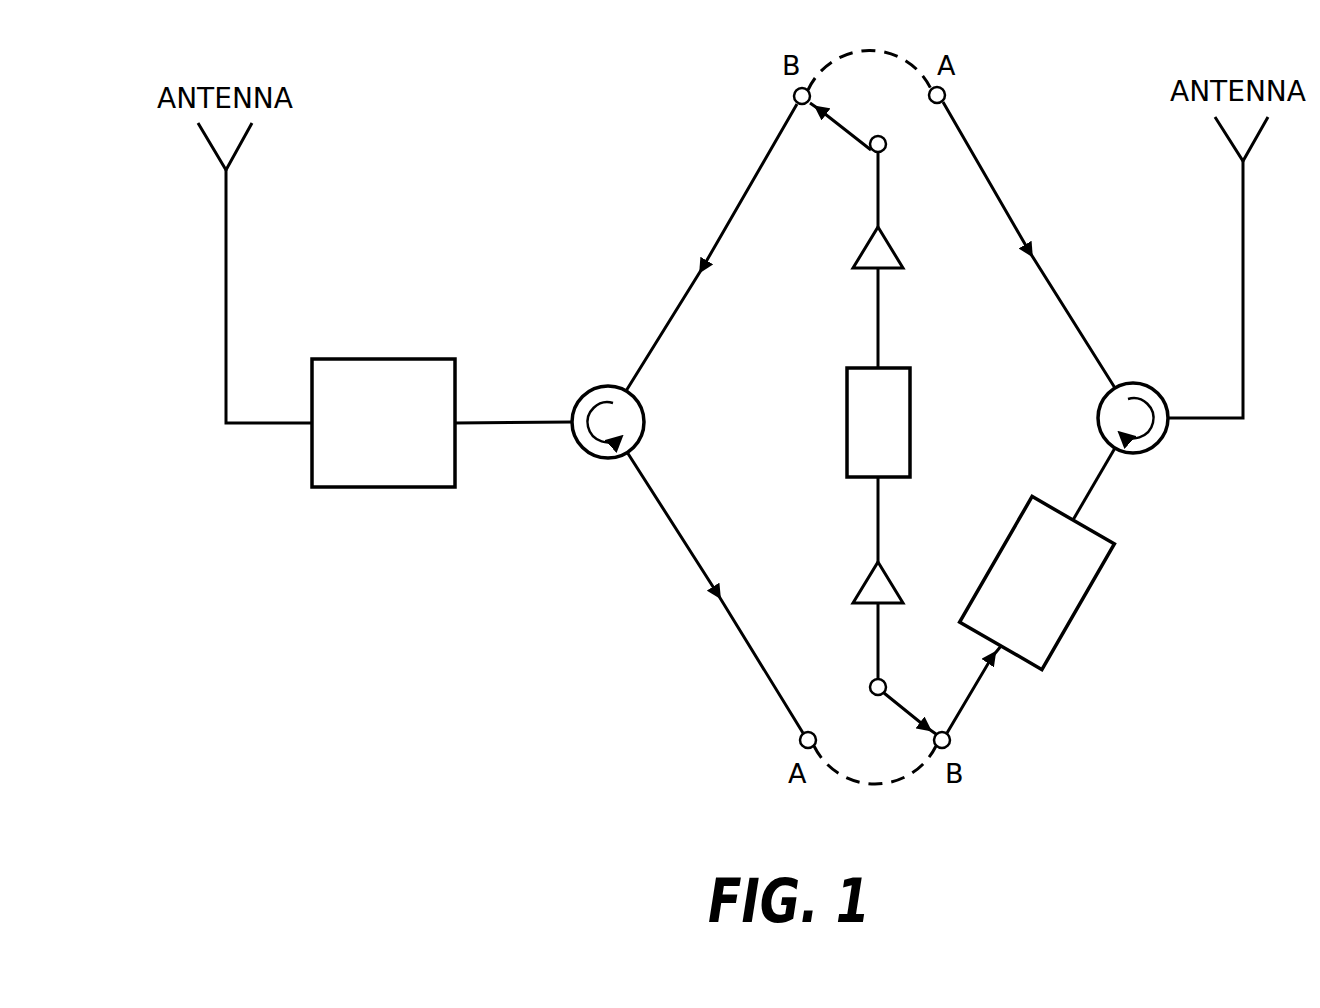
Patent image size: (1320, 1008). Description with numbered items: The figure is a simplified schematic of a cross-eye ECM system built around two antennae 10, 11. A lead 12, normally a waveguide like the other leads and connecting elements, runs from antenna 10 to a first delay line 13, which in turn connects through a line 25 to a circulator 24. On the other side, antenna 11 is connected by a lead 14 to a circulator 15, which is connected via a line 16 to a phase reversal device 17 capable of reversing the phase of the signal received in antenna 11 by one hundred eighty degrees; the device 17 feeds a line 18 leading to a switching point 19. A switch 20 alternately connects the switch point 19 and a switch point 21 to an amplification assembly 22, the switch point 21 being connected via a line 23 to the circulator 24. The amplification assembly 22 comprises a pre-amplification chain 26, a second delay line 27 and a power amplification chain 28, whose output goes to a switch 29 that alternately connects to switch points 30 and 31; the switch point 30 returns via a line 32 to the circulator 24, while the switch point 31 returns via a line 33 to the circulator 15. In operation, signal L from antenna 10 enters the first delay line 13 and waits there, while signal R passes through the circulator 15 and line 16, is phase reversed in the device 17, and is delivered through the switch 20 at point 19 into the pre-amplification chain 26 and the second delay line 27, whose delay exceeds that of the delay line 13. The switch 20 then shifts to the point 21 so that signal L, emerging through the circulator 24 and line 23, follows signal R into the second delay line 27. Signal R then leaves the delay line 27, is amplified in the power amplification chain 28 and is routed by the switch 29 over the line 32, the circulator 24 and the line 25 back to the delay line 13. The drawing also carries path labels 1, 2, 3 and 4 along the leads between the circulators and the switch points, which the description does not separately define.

The first path 1 is at (711, 247).
The second path 2 is at (715, 592).
The third path 3 is at (1094, 488).
The fourth path 4 is at (1029, 245).
The antenna 10 is at (240, 147).
The antenna 11 is at (1222, 137).
The lead 12 is at (227, 305).
The first delay line 13 is at (396, 359).
The lead 14 is at (1243, 425).
The circulator 15 is at (1160, 391).
The line 16 is at (1100, 472).
The phase reversal device 17 is at (1030, 547).
The line 18 is at (978, 678).
The switching point 19 is at (950, 744).
The switch 20 is at (897, 706).
The switch point 21 is at (796, 745).
The amplification assembly 22 is at (895, 428).
The line 23 is at (666, 512).
The circulator 24 is at (582, 446).
The line 25 is at (537, 423).
The pre-amplification chain 26 is at (902, 596).
The second delay line 27 is at (910, 462).
The power amplification chain 28 is at (855, 265).
The switch 29 is at (851, 129).
The switch point 30 is at (795, 96).
The switch point 31 is at (947, 98).
The line 32 is at (666, 329).
The line 33 is at (1075, 330).